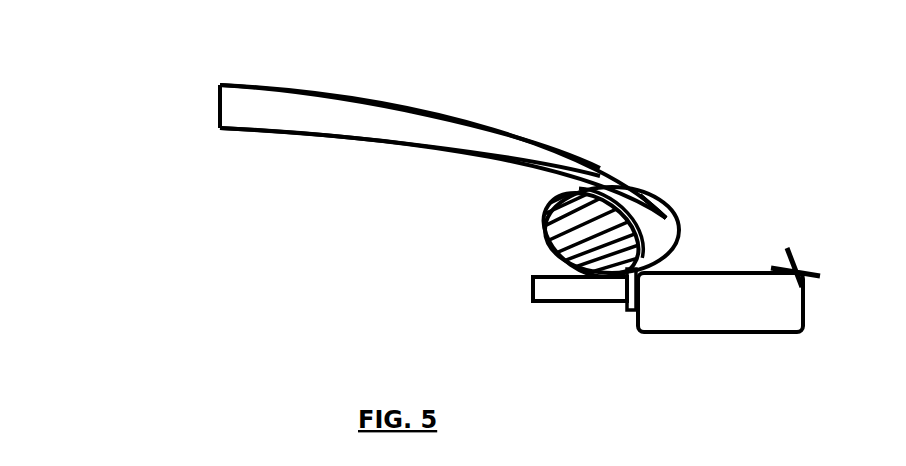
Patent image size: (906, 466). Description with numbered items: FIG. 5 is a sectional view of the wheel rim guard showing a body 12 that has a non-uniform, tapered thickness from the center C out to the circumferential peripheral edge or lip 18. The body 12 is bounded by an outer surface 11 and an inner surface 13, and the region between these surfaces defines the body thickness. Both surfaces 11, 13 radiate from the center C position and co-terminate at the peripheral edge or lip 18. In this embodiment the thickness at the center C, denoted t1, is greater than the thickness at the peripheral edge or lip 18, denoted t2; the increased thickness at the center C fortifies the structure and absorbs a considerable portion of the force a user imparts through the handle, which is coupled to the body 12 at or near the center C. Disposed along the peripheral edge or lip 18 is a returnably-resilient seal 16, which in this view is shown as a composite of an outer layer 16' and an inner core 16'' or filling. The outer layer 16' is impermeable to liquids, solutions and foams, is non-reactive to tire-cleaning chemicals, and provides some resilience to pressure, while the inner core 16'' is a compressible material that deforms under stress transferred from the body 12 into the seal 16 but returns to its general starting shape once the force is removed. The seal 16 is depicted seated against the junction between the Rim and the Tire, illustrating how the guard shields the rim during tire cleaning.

The body 12 is at (150, 61).
The outer surface 11 is at (250, 86).
The inner surface 13 is at (249, 130).
The thickness at the center t1 is at (197, 88).
The center C is at (221, 148).
The seal 16 is at (655, 290).
The outer layer 16' is at (569, 239).
The inner core 16'' is at (539, 218).
The peripheral edge or lip 18 is at (664, 222).
The thickness at the peripheral edge t2 is at (666, 220).
The rim Rim is at (627, 302).
The tire Tire is at (712, 273).